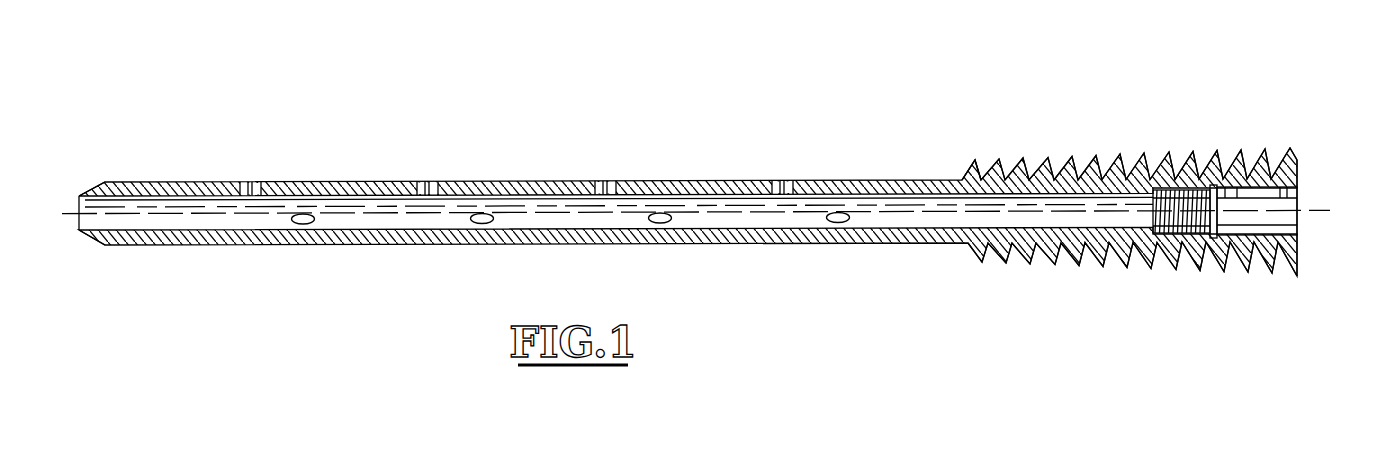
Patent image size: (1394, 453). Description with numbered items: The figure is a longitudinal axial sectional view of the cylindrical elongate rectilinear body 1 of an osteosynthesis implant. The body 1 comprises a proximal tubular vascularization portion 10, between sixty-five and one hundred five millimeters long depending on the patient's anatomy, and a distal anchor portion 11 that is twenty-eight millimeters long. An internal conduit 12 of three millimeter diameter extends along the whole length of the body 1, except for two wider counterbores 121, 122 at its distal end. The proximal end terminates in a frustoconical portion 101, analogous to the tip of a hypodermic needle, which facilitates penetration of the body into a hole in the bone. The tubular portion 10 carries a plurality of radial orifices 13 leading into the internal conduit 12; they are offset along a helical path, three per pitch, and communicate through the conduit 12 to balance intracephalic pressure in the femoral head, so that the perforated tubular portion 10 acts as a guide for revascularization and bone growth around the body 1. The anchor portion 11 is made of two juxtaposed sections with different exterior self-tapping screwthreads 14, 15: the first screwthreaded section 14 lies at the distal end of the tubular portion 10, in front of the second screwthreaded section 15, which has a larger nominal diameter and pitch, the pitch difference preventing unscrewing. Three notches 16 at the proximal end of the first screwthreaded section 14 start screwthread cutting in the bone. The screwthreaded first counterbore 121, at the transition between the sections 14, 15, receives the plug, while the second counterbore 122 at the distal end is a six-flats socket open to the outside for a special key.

The cylindrical elongate rectilinear body 1 is at (730, 108).
The proximal tubular vascularization portion 10 is at (720, 232).
The frustoconical portion 101 is at (105, 192).
The distal anchor portion 11 is at (1117, 280).
The internal conduit 12 is at (400, 225).
The radial orifices 13 is at (482, 214).
The first screwthreaded section 14 is at (1095, 163).
The second screwthreaded section 15 is at (1277, 252).
The notches 16 is at (990, 175).
The first counterbore 121 is at (1182, 190).
The second counterbore 122 is at (1300, 191).